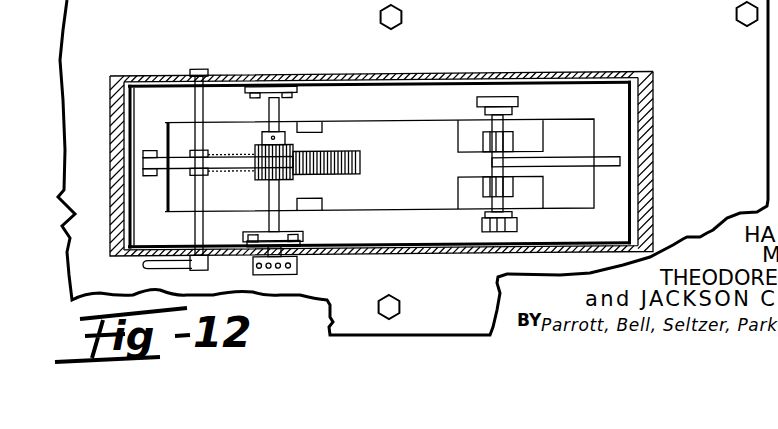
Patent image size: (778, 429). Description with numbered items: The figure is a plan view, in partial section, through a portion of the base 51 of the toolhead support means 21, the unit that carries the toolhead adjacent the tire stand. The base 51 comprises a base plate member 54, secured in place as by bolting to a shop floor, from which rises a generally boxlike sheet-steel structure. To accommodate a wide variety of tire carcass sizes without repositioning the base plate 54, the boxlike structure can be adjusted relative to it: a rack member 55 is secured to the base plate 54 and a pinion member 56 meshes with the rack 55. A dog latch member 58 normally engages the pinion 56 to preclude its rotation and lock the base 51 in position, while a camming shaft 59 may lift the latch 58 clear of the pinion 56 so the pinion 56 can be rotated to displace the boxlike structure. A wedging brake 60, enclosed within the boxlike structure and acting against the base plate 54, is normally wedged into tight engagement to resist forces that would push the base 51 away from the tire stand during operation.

The toolhead support means 21 is at (457, 66).
The base 51 is at (357, 78).
The base plate member 54 is at (738, 98).
The rack member 55 is at (347, 154).
The pinion member 56 is at (283, 180).
The dog latch member 58 is at (243, 164).
The camming shaft 59 is at (203, 171).
The wedging brake 60 is at (513, 150).